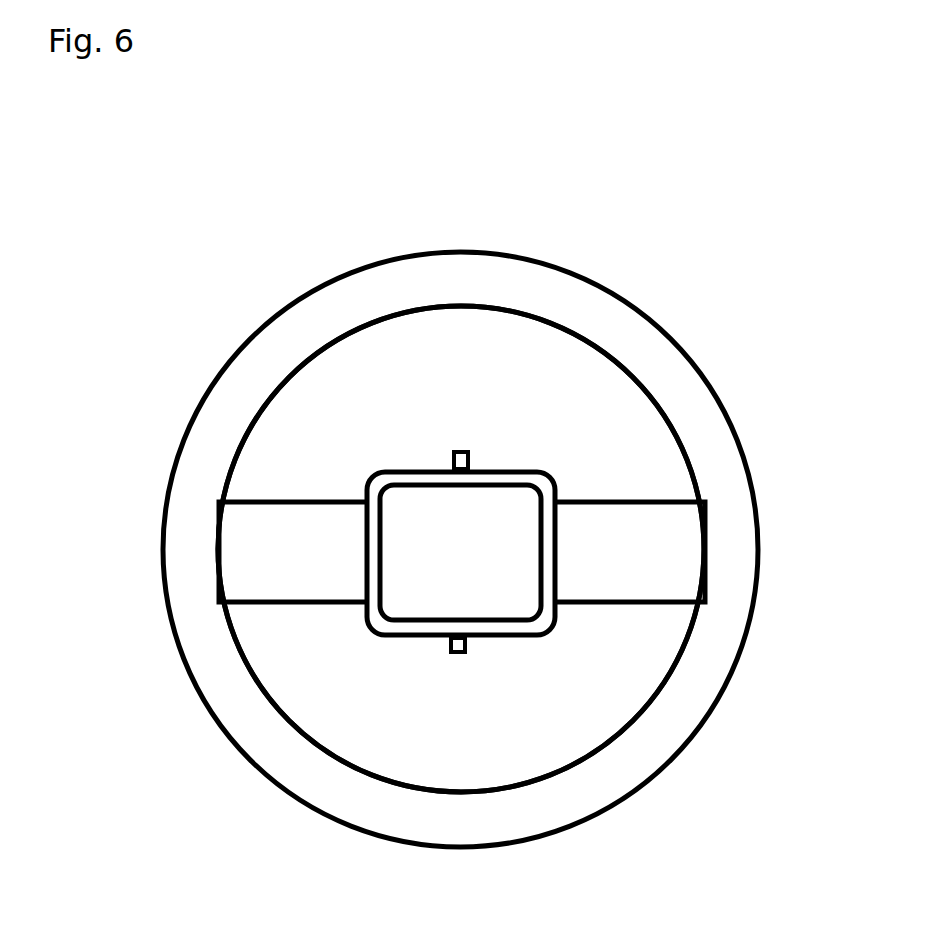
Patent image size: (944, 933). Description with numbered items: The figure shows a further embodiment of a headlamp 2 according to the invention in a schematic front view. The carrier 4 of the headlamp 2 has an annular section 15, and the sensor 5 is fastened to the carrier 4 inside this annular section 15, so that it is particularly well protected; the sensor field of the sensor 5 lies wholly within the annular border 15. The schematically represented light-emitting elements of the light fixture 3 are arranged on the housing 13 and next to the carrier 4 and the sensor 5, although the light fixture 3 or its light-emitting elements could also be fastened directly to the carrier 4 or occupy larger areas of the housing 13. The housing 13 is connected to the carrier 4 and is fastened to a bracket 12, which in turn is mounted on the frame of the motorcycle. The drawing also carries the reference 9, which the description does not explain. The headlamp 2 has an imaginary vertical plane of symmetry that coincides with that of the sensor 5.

The headlamp 2 is at (230, 316).
The light fixture 3 is at (457, 657).
The carrier 4 is at (633, 565).
The sensor 5 is at (462, 552).
The inner disc 9 is at (461, 549).
The bracket 12 is at (642, 758).
The housing 13 is at (358, 692).
The annular section 15 is at (546, 474).